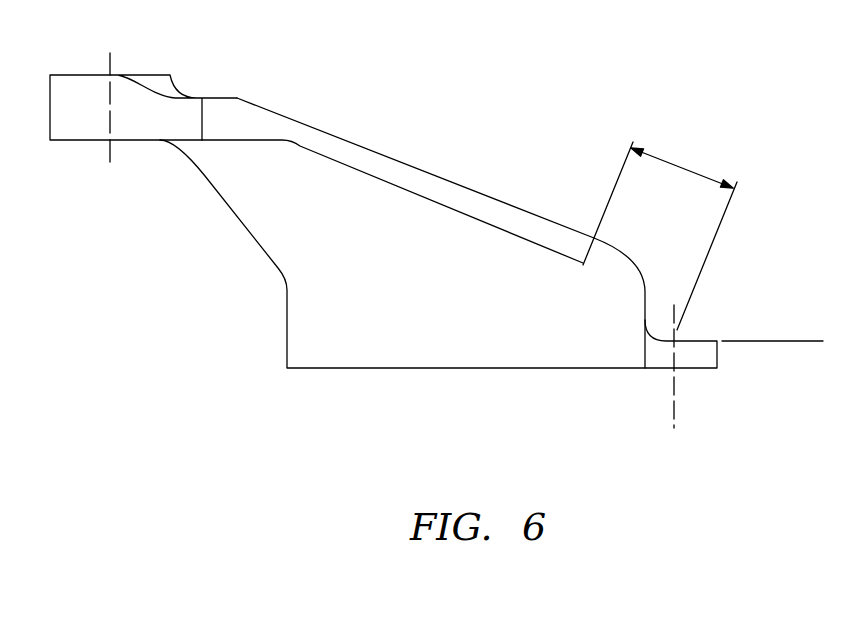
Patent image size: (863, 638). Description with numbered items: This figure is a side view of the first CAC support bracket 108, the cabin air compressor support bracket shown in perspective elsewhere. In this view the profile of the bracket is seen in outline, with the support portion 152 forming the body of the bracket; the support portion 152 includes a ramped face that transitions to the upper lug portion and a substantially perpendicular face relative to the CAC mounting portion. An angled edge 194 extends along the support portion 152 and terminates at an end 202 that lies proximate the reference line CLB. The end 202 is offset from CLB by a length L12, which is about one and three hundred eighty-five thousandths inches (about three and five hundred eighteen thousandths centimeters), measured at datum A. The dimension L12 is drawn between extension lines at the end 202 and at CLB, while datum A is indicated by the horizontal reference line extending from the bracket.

The first CAC support bracket 108 is at (383, 244).
The support portion 152 is at (352, 328).
The angled edge 194 is at (460, 183).
The end 202 is at (593, 237).
The length L12 is at (660, 232).
The element CLB is at (674, 417).
The datum A is at (813, 341).